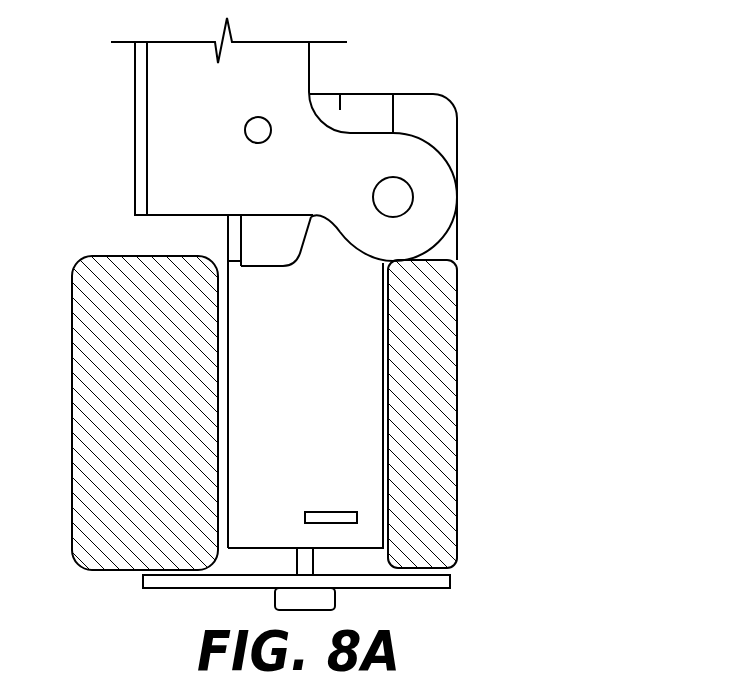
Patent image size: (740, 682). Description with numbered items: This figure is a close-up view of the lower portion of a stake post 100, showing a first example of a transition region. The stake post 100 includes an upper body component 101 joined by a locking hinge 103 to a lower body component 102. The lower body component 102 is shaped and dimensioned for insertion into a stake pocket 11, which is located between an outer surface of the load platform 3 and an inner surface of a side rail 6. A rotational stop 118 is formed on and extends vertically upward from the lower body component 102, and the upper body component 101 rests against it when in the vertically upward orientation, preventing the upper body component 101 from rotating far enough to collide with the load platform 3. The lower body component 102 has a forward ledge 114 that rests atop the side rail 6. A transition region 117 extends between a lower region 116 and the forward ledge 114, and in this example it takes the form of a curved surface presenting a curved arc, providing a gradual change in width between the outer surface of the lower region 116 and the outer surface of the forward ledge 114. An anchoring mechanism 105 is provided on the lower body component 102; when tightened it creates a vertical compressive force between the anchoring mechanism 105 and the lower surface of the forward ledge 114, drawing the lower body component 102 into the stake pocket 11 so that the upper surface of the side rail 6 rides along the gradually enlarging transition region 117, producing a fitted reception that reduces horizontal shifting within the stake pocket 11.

The stake post 100 is at (597, 67).
The locking hinge 103 is at (463, 75).
The upper body component 101 is at (160, 110).
The forward ledge 114 is at (447, 252).
The rotational stop 118 is at (227, 245).
The lower body component 102 is at (358, 487).
The lower region 116 is at (368, 388).
The load platform 3 is at (108, 370).
The side rail 6 is at (433, 437).
The transition region 117 is at (388, 283).
The stake pocket 11 is at (363, 560).
The anchoring mechanism 105 is at (176, 600).